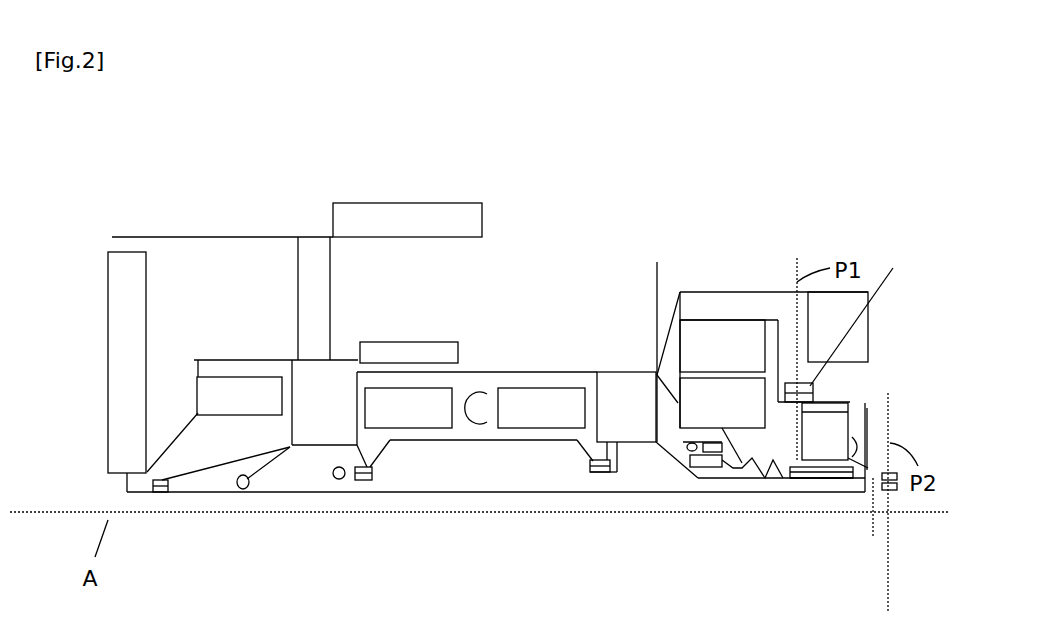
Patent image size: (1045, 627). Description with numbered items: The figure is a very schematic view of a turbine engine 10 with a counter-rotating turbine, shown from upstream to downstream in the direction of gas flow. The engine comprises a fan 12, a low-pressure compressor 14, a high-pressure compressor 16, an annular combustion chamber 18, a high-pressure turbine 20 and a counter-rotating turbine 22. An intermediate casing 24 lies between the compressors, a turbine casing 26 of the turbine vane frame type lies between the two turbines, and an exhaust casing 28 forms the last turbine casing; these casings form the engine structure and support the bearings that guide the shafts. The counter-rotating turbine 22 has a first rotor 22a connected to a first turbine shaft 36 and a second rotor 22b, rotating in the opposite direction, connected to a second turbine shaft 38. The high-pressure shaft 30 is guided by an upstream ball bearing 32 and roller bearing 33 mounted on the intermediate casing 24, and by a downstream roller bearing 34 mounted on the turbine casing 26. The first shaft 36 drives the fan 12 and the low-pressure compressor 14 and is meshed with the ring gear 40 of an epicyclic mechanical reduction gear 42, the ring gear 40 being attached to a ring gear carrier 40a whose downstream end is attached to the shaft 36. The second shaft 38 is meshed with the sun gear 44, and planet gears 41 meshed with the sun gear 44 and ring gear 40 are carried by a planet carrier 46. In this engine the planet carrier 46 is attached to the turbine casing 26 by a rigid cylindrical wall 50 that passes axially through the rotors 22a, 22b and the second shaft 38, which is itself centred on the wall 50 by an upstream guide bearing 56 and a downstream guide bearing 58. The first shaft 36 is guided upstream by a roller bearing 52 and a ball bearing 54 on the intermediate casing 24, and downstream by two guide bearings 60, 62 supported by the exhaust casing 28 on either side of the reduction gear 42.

The turbine engine 10 is at (829, 126).
The fan 12 is at (101, 383).
The low-pressure compressor 14 is at (235, 381).
The high-pressure compressor 16 is at (435, 383).
The annular combustion chamber 18 is at (479, 383).
The high-pressure turbine 20 is at (555, 383).
The counter-rotating turbine 22 is at (711, 309).
The first rotor 22a is at (722, 318).
The second rotor 22b is at (657, 338).
The intermediate casing 24 is at (337, 341).
The turbine casing 26 is at (621, 369).
The exhaust casing 28 is at (868, 292).
The high-pressure shaft 30 is at (466, 441).
The upstream ball bearing 32 is at (339, 482).
The upstream roller bearing 33 is at (364, 483).
The downstream roller bearing 34 is at (598, 475).
The first turbine shaft 36 is at (777, 348).
The second turbine shaft 38 is at (738, 479).
The ring gear 40 is at (828, 400).
The ring gear carrier 40a is at (857, 409).
The planet gears 41 is at (830, 483).
The mechanical reduction gear 42 is at (867, 405).
The sun gear 44 is at (815, 479).
The planet carrier 46 is at (873, 525).
The cylindrical wall 50 is at (780, 479).
The upstream roller bearing 52 is at (160, 493).
The downstream ball bearing 54 is at (243, 490).
The upstream guide bearing 56 is at (688, 449).
The downstream guide bearing 58 is at (713, 479).
The upstream guide bearing 60 is at (846, 322).
The downstream guide bearing 62 is at (900, 483).